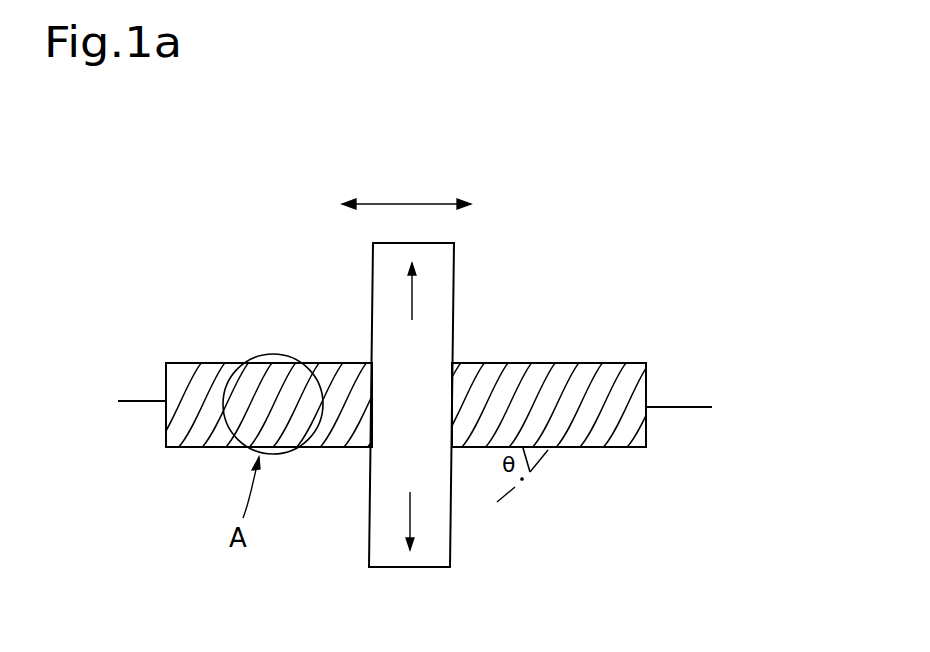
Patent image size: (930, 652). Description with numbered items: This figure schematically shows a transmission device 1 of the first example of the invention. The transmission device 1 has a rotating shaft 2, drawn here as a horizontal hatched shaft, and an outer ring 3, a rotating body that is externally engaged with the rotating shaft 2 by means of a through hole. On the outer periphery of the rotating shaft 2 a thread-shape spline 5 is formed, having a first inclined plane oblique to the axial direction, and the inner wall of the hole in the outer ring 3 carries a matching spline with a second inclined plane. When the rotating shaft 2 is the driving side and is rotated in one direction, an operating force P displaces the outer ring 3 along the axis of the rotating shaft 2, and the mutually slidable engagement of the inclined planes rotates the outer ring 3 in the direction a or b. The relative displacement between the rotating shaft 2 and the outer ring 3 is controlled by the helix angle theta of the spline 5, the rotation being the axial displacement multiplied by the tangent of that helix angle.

The transmission device 1 is at (493, 203).
The rotating shaft 2 is at (570, 365).
The outer ring 3 is at (438, 280).
The thread-shape spline 5 is at (598, 430).